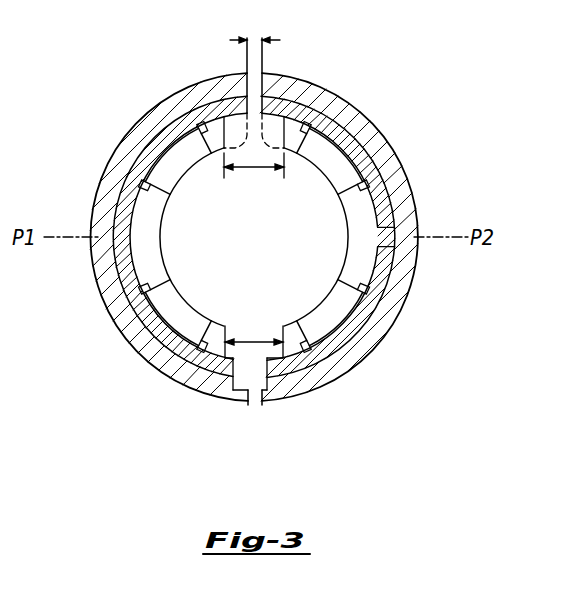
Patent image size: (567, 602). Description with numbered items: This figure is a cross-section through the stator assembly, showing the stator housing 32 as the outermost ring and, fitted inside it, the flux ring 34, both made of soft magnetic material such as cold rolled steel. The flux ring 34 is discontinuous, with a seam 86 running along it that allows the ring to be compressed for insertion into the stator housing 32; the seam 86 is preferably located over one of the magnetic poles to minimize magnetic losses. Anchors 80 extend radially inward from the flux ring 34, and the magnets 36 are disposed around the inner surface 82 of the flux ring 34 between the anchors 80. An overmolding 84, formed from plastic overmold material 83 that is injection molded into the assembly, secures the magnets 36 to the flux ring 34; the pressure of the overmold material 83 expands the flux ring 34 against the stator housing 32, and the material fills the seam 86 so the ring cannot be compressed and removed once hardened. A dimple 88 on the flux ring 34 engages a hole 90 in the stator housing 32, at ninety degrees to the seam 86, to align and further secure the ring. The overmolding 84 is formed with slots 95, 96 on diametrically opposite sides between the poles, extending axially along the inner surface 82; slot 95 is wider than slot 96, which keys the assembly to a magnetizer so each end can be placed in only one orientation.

The stator housing 32 is at (187, 88).
The flux ring 34 is at (232, 97).
The magnets 36 is at (163, 157).
The anchors 80 is at (203, 133).
The inner surface 82 is at (346, 242).
The overmold material 83 is at (210, 370).
The overmolding 84 is at (282, 322).
The seam 86 is at (392, 193).
The dimple 88 is at (250, 390).
The hole 90 is at (242, 388).
The slot 95 is at (272, 38).
The slot 96 is at (258, 392).